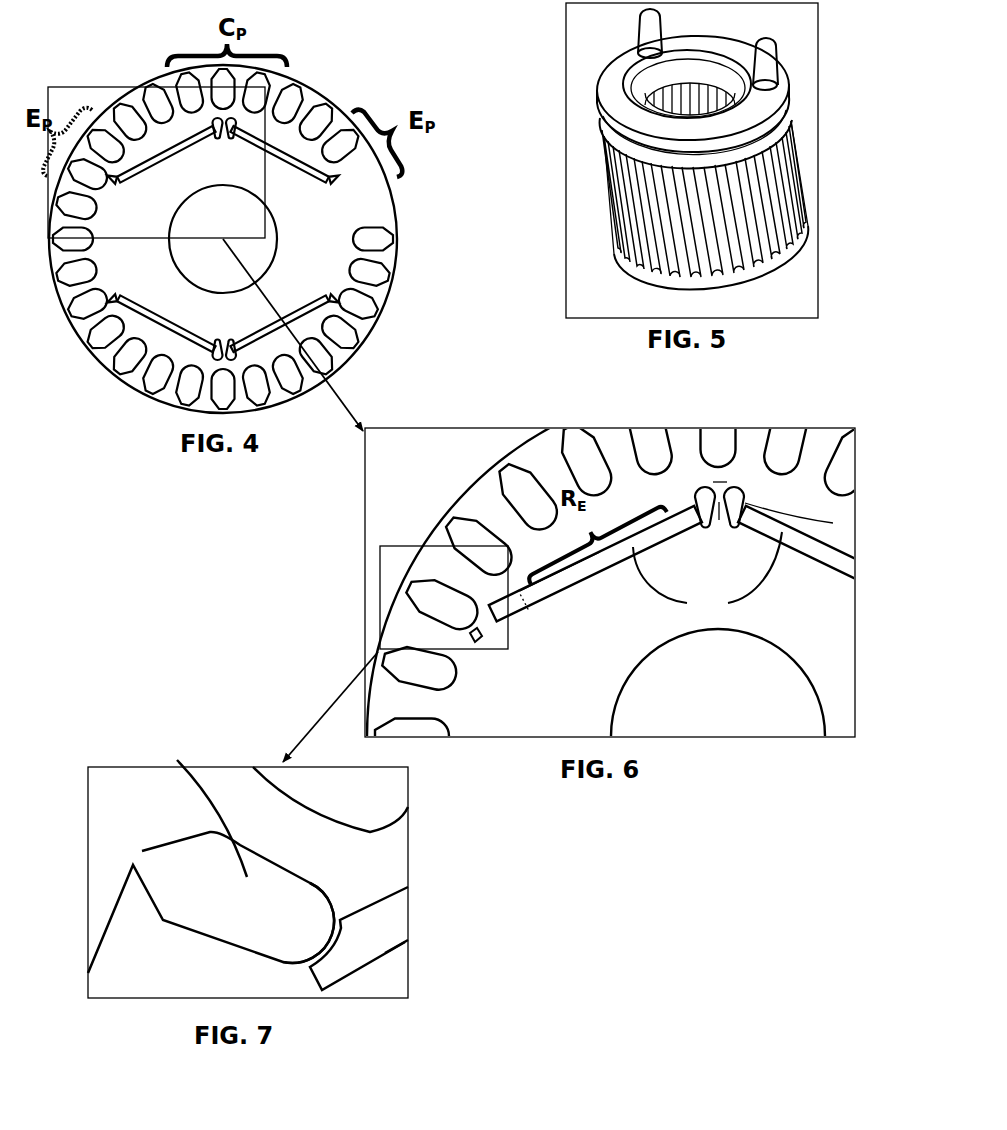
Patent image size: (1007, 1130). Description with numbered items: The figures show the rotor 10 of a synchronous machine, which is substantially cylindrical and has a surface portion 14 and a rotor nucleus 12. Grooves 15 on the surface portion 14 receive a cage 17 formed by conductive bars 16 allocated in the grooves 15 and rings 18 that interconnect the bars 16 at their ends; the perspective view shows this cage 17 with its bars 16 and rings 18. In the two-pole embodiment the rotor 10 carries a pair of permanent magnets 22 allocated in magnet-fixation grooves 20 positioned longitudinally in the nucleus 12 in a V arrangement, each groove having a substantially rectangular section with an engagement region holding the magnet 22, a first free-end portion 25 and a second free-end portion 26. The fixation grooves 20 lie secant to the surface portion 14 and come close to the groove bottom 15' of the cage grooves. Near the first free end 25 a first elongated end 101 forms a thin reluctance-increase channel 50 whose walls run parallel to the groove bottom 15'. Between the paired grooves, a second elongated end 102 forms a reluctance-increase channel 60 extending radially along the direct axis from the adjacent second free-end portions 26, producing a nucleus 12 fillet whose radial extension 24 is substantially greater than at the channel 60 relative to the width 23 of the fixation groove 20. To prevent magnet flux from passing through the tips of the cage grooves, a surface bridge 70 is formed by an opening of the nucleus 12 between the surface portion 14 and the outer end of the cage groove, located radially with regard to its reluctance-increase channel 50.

In FIG. 4, the rotor 10 is at (265, 229).
In FIG. 4, the rotor nucleus 12 is at (130, 327).
In FIG. 4, the surface portion 14 is at (314, 88).
In FIG. 4, the grooves 15 is at (399, 312).
In FIG. 4, the groove bottom 15' is at (413, 264).
In FIG. 7, the groove bottom 15' is at (351, 979).
In FIG. 5, the conductive bars 16 is at (602, 218).
In FIG. 7, the conductive bars 16 is at (177, 760).
In FIG. 5, the cage 17 is at (684, 172).
In FIG. 5, the rings 18 is at (792, 260).
In FIG. 6, the magnet-fixation grooves 20 is at (583, 592).
In FIG. 6, the permanent magnets 22 is at (707, 575).
In FIG. 6, the width 23 is at (531, 619).
In FIG. 6, the extension 24 is at (725, 486).
In FIG. 6, the first free-end portion 25 is at (512, 585).
In FIG. 6, the second free-end portion 26 is at (705, 478).
In FIG. 6, the reluctance-increase channel 50 is at (476, 642).
In FIG. 7, the reluctance-increase channel 50 is at (333, 940).
In FIG. 6, the reluctance-increase channel 60 is at (718, 516).
In FIG. 7, the surface bridge 70 is at (142, 857).
In FIG. 7, the first elongated end 101 is at (348, 962).
In FIG. 6, the second elongated end 102 is at (833, 523).